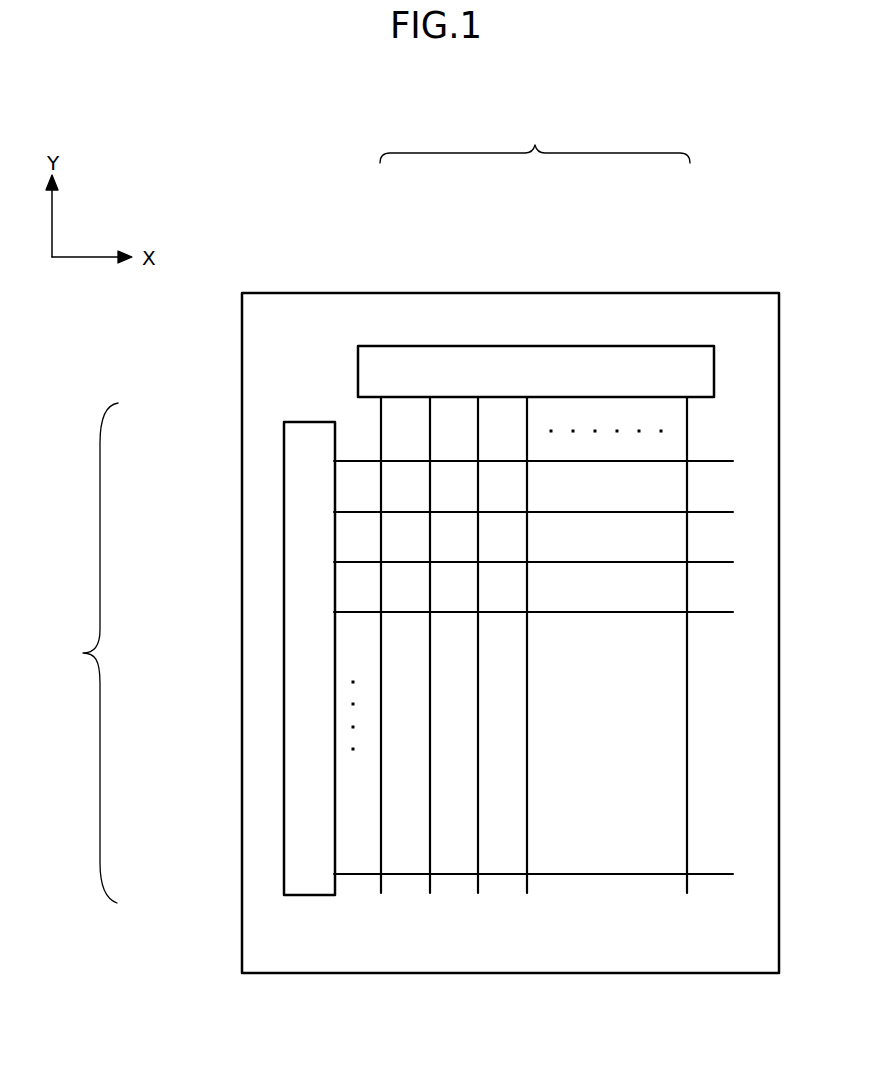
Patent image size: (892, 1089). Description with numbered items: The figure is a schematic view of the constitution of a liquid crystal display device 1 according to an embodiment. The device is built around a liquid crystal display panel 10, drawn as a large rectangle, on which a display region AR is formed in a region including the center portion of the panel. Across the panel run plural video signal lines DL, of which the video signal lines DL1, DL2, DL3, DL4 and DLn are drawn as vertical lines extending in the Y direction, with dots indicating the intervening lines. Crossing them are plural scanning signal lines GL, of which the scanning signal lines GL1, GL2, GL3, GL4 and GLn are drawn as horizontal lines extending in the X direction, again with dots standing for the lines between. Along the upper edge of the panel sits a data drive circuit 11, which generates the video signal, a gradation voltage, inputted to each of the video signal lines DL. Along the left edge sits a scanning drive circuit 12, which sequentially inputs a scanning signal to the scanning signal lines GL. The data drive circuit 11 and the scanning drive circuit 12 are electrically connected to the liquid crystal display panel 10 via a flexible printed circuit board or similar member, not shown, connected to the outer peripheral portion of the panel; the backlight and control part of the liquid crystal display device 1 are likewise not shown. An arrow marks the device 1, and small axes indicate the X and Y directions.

The liquid crystal display device 1 is at (539, 88).
The liquid crystal display panel 10 is at (757, 293).
The data drive circuit 11 is at (545, 346).
The scanning drive circuit 12 is at (284, 730).
The video signal lines DL is at (535, 138).
The video signal line DL1 is at (380, 433).
The video signal line DL2 is at (428, 433).
The video signal line DL3 is at (477, 433).
The video signal line DL4 is at (527, 433).
The video signal line DLn is at (688, 426).
The scanning signal lines GL is at (80, 653).
The scanning signal line GL1 is at (350, 461).
The scanning signal line GL2 is at (350, 512).
The scanning signal line GL3 is at (350, 562).
The scanning signal line GL4 is at (350, 612).
The scanning signal line GLn is at (363, 874).
The display region AR is at (618, 713).